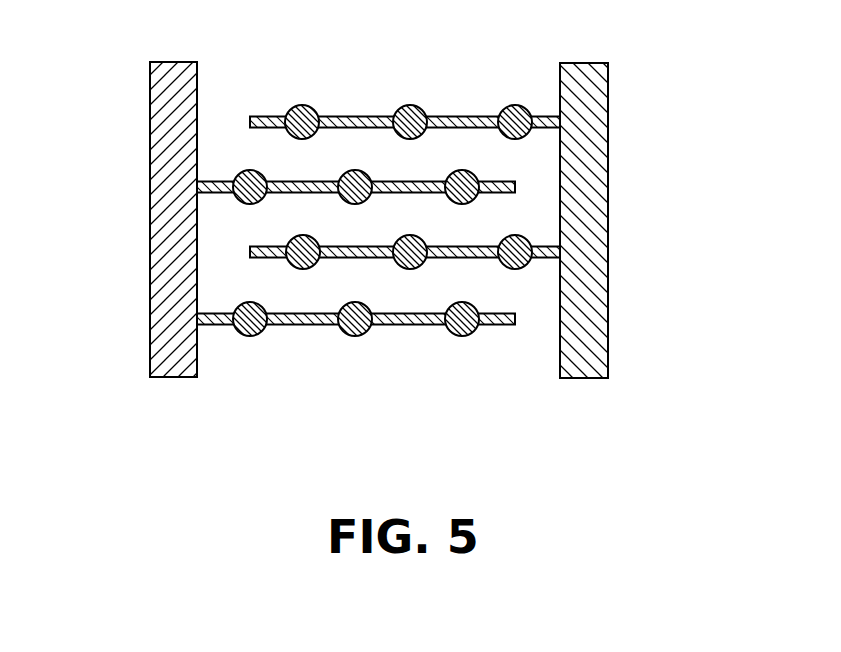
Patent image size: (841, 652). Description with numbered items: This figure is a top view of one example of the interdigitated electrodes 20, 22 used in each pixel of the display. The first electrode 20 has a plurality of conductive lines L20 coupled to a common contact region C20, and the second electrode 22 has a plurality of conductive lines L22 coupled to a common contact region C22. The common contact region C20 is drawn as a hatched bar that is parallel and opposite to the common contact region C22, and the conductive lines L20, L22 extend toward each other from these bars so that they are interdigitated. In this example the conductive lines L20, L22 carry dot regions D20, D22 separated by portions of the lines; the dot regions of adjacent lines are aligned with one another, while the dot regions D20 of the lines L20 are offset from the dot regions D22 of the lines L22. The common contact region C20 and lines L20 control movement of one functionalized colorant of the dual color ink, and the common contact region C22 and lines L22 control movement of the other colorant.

The first electrode 20 is at (492, 229).
The second electrode 22 is at (271, 255).
The common contact region C20 is at (608, 218).
The common contact region C22 is at (112, 219).
The conductive lines L20 is at (457, 117).
The conductive lines L22 is at (248, 392).
The dot regions D20 is at (300, 106).
The dot regions D22 is at (355, 336).